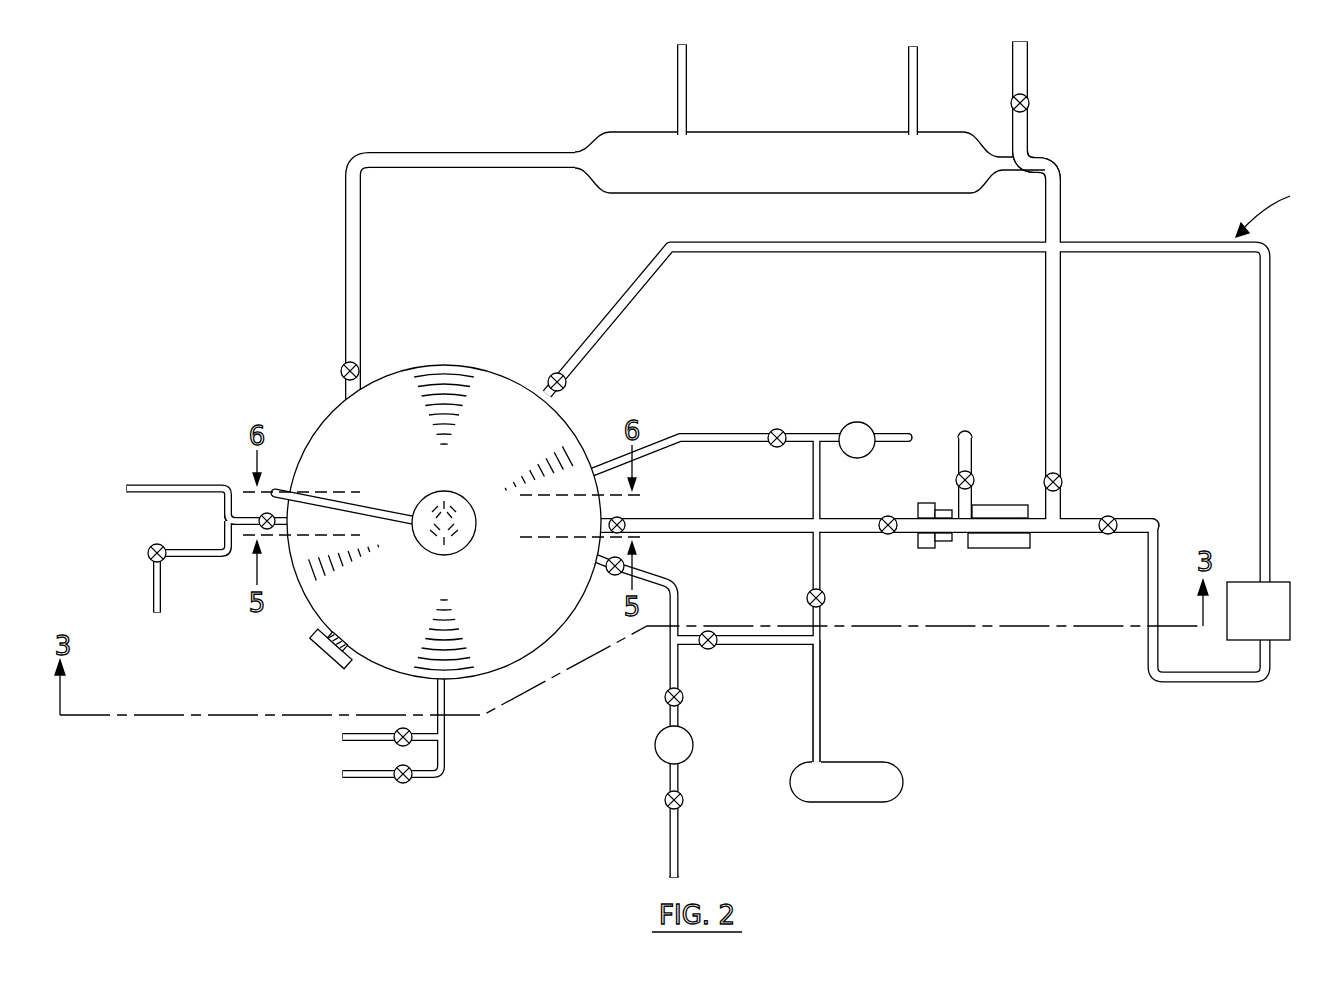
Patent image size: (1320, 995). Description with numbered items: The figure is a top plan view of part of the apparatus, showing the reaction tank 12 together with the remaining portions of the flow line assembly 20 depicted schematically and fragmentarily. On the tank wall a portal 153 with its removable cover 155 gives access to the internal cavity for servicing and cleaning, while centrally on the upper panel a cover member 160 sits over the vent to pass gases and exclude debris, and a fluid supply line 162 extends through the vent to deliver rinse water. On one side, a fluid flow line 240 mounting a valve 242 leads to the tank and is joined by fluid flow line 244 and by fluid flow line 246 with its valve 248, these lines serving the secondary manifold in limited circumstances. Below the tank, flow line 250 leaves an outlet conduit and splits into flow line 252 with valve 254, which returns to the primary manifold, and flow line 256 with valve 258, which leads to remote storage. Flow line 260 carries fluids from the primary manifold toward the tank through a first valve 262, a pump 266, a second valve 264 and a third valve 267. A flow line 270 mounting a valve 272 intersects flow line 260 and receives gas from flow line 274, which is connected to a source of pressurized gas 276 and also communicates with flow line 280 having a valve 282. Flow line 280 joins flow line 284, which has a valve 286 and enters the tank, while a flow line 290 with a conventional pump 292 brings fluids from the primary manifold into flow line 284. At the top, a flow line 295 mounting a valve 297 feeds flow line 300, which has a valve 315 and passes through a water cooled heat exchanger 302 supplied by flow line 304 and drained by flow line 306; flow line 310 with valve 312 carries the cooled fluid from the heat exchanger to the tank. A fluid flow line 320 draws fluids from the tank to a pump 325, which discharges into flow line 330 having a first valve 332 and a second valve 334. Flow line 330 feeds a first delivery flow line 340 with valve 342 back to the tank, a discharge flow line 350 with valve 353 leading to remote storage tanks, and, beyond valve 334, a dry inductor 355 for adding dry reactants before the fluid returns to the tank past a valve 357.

The reaction tank 12 is at (477, 366).
The flow line assembly 20 is at (1277, 207).
The portal 153 is at (337, 641).
The removable cover 155 is at (331, 649).
The cover member 160 is at (455, 497).
The fluid supply line 162 is at (393, 510).
The fluid flow line 240 is at (245, 497).
The valve 242 is at (285, 515).
The fluid flow line 244 is at (181, 488).
The fluid flow line 246 is at (208, 549).
The valve 248 is at (150, 551).
The flow line 250 is at (447, 692).
The flow line 252 is at (352, 733).
The valve 254 is at (398, 745).
The flow line 256 is at (373, 780).
The valve 258 is at (405, 783).
The flow line 260 is at (678, 591).
The first valve 262 is at (665, 697).
The second valve 264 is at (664, 800).
The pump 266 is at (655, 740).
The third valve 267 is at (604, 565).
The flow line 270 is at (780, 647).
The valve 272 is at (713, 648).
The flow line 274 is at (818, 665).
The source of pressurized gas 276 is at (827, 796).
The flow line 280 is at (821, 572).
The valve 282 is at (826, 598).
The flow line 284 is at (797, 437).
The valve 286 is at (771, 446).
The flow line 290 is at (908, 433).
The pump 292 is at (860, 422).
The flow line 295 is at (1030, 80).
The valve 297 is at (1030, 108).
The flow line 300 is at (1063, 213).
The heat exchanger 302 is at (752, 172).
The flow line 304 is at (689, 77).
The flow line 306 is at (905, 80).
The flow line 310 is at (423, 165).
The valve 312 is at (358, 362).
The valve 315 is at (1062, 480).
The fluid flow line 320 is at (706, 536).
The pump 325 is at (928, 552).
The flow line 330 is at (863, 517).
The first valve 332 is at (883, 536).
The second valve 334 is at (1112, 515).
The first delivery flow line 340 is at (660, 520).
The valve 342 is at (605, 520).
The discharge flow line 350 is at (968, 452).
The valve 353 is at (974, 478).
The dry inductor 355 is at (1275, 620).
The valve 357 is at (567, 385).